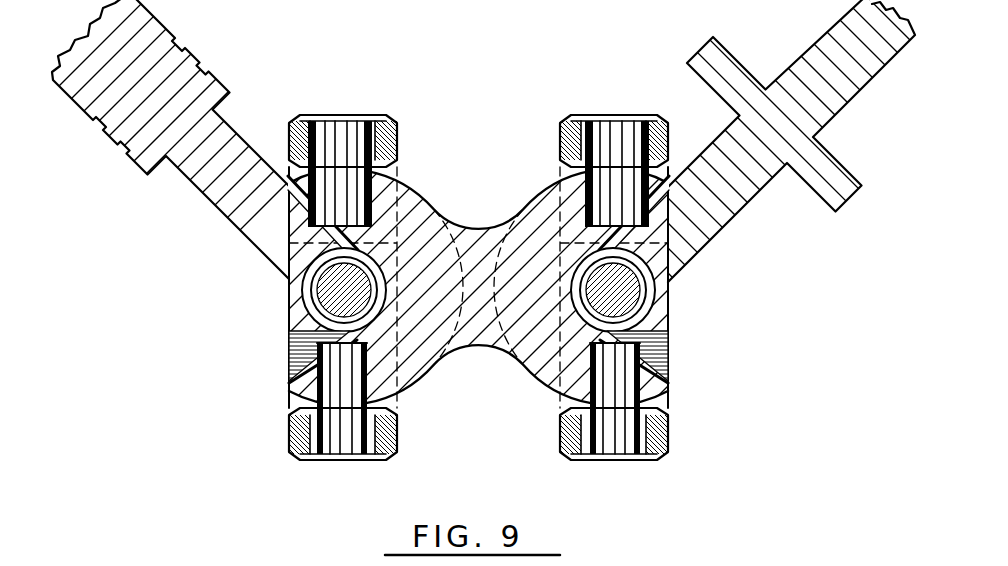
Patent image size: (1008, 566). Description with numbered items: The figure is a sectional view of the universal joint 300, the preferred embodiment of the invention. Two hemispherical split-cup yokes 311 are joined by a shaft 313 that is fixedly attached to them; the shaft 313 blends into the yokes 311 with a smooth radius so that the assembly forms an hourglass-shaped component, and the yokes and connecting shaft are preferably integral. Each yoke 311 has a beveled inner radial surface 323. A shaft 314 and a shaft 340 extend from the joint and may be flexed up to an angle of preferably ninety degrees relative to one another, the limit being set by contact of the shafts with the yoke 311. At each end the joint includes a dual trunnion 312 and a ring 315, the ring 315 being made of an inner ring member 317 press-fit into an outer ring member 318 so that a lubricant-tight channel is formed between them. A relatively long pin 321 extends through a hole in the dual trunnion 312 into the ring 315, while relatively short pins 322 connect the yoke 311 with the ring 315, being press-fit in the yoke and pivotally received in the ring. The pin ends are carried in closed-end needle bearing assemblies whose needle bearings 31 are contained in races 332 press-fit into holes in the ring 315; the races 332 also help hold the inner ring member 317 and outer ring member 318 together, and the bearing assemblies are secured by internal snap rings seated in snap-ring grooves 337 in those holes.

The universal joint 300 is at (175, 459).
The needle bearings 31 is at (303, 112).
The hemispherical split-cup yoke 311 is at (430, 373).
The dual trunnion 312 is at (307, 310).
The shaft 313 is at (478, 226).
The shaft 314 is at (213, 208).
The ring 315 is at (290, 118).
The inner ring member 317 is at (560, 150).
The outer ring member 318 is at (396, 134).
The long pin 321 is at (335, 305).
The short pin 322 is at (333, 114).
The beveled inner radial surface of yoke 323 is at (290, 368).
The races 332 is at (292, 142).
The snap-ring grooves 337 is at (352, 114).
The shaft 340 is at (747, 206).